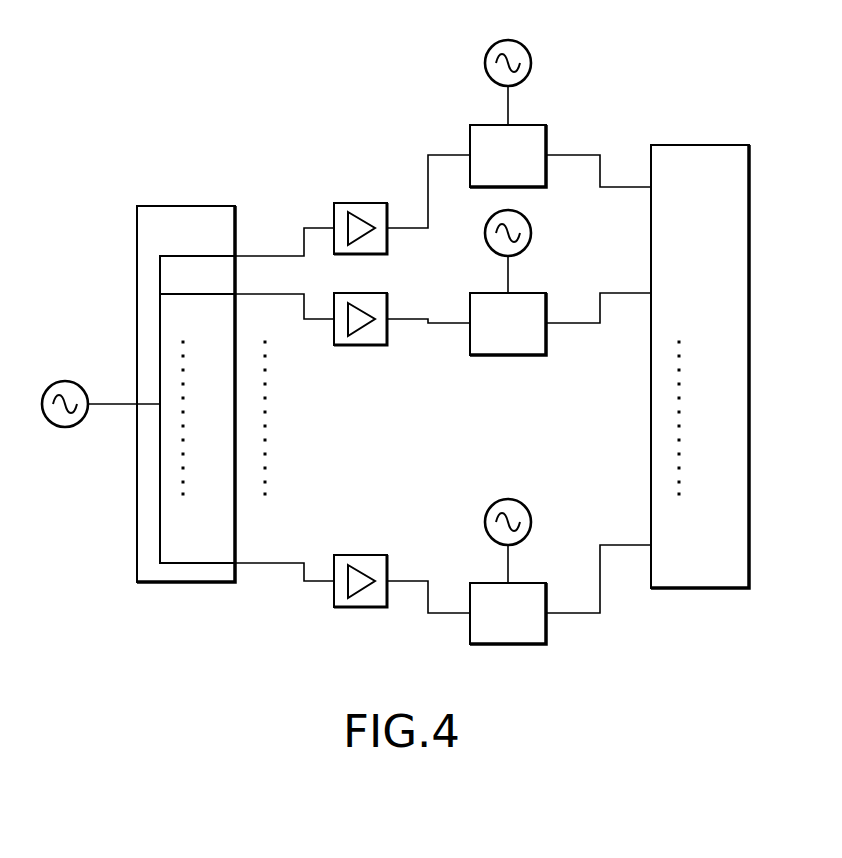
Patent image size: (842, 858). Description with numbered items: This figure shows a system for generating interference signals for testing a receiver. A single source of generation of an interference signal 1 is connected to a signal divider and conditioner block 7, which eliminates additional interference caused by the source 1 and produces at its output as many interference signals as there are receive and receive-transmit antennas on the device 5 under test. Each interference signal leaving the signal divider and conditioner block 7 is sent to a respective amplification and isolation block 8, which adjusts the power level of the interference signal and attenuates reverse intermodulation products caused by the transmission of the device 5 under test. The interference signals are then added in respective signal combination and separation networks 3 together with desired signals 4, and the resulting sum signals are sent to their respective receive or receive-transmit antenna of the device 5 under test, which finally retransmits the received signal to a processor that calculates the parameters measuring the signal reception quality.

The source of generation of an interference signal 1 is at (56, 382).
The signal divider and conditioner block 7 is at (182, 206).
The amplification and isolation block 8 is at (357, 203).
The signal combination and separation network 3 is at (470, 135).
The desired signal 4 is at (524, 47).
The device under test 5 is at (700, 145).